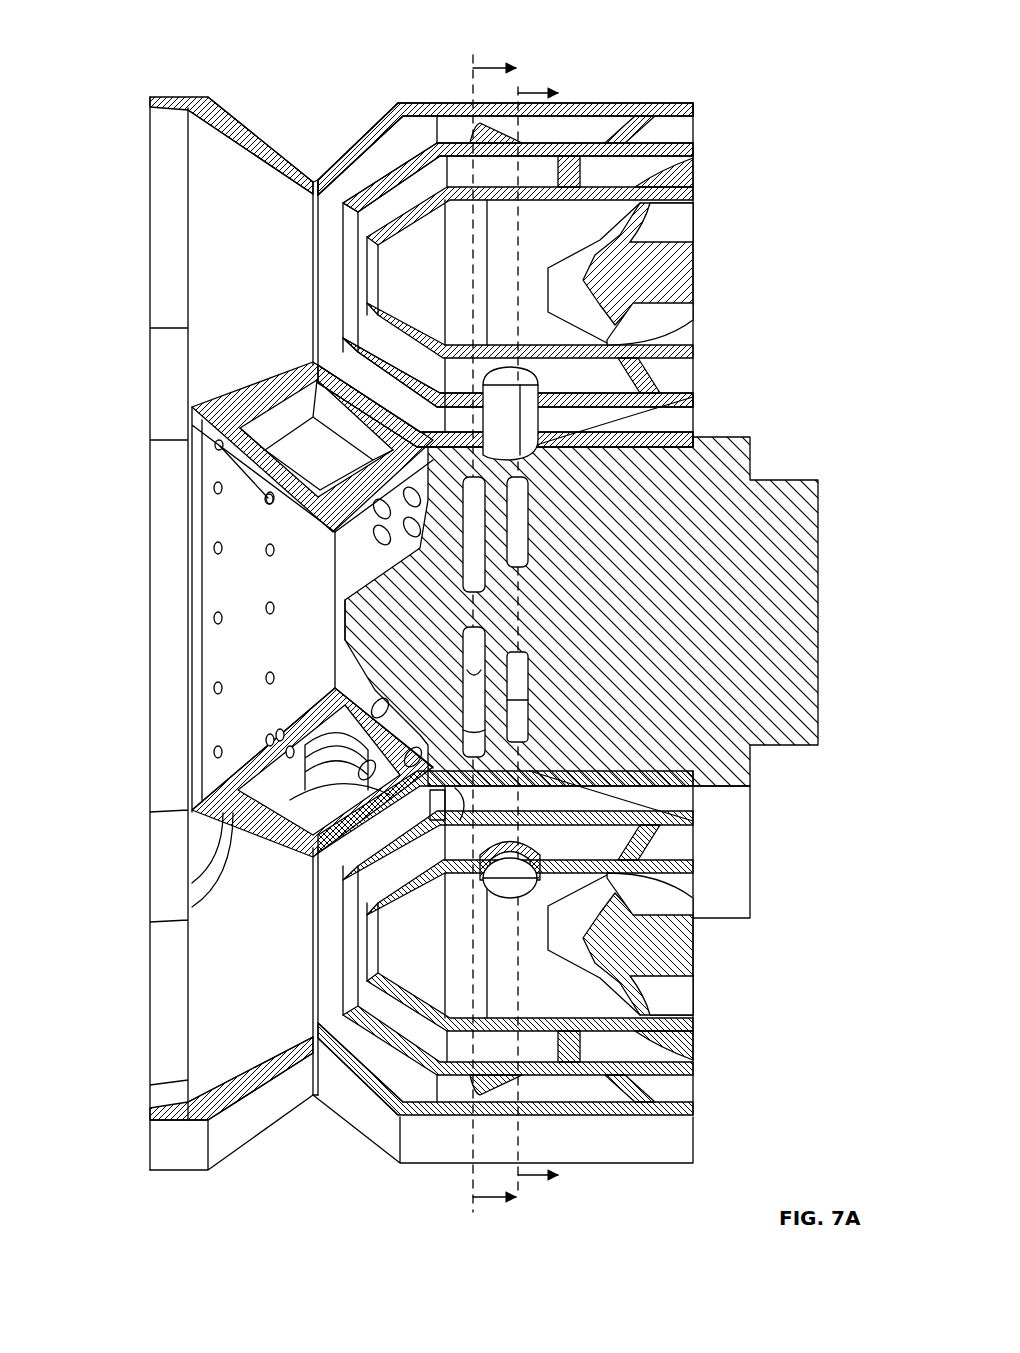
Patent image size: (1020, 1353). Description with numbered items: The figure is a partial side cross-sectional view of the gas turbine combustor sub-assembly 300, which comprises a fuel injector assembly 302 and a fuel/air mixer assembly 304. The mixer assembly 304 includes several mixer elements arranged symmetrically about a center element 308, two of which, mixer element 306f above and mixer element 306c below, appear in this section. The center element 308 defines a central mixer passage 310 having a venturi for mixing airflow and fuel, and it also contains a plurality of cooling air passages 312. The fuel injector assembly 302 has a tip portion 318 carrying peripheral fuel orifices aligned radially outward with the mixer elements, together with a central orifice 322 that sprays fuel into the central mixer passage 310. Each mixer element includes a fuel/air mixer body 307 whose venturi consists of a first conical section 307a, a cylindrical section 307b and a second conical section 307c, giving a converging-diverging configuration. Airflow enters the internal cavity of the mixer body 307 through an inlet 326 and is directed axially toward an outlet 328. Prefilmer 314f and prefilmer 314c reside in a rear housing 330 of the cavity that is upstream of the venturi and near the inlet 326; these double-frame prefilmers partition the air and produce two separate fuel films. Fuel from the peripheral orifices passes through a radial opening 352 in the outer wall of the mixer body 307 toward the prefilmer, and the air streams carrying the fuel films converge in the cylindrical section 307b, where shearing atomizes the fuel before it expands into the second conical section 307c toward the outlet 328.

The gas turbine combustor sub-assembly 300 is at (140, 73).
The fuel injector assembly 302 is at (790, 482).
The fuel/air mixer assembly 304 is at (133, 206).
The mixer element 306c is at (320, 1180).
The mixer element 306f is at (296, 103).
The fuel/air mixer body 307 is at (180, 93).
The first conical section 307a is at (373, 130).
The cylindrical section 307b is at (317, 168).
The second conical section 307c is at (243, 122).
The center element 308 is at (140, 690).
The central mixer passage 310 is at (218, 552).
The cooling air passages 312 is at (220, 572).
The prefilmer 314c is at (722, 977).
The prefilmer 314f is at (722, 267).
The tip portion 318 is at (355, 578).
The central orifice 322 is at (340, 628).
The inlet 326 is at (694, 188).
The outlet 328 is at (148, 297).
The rear housing 330 is at (642, 102).
The radial opening 352 is at (530, 440).